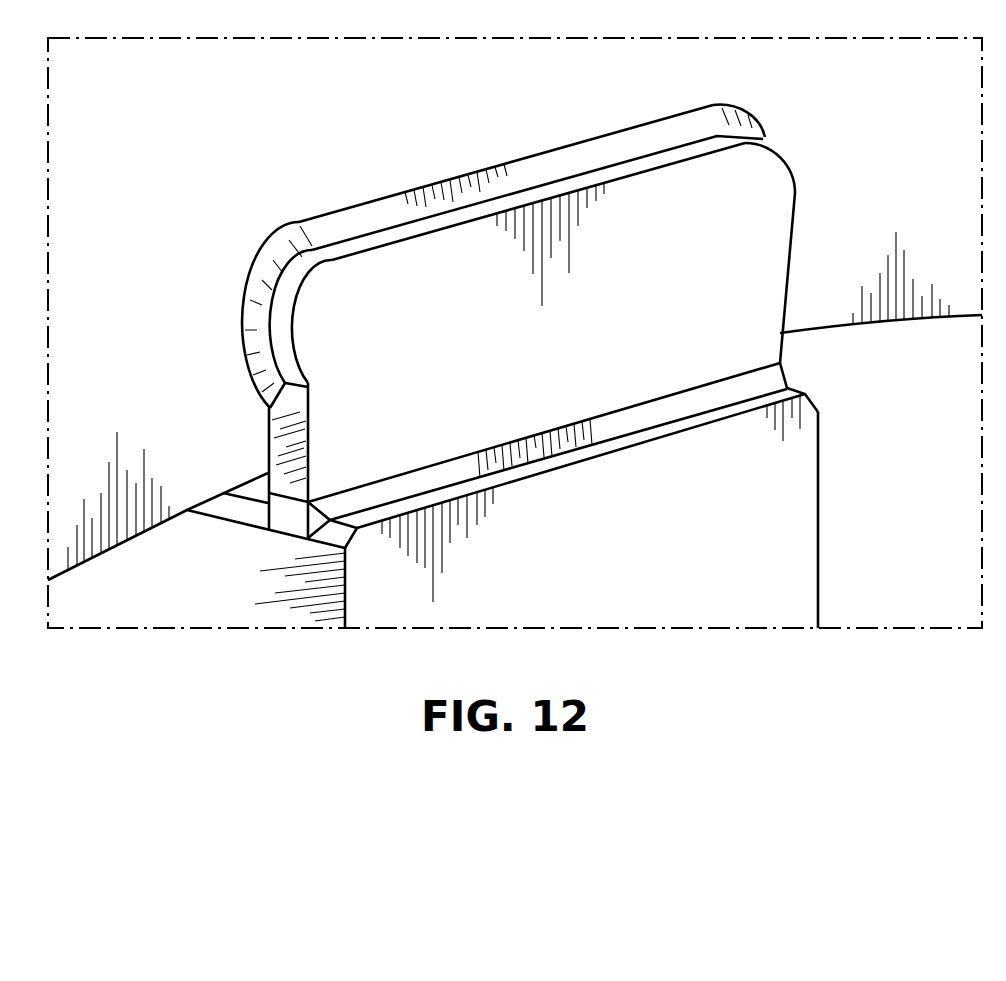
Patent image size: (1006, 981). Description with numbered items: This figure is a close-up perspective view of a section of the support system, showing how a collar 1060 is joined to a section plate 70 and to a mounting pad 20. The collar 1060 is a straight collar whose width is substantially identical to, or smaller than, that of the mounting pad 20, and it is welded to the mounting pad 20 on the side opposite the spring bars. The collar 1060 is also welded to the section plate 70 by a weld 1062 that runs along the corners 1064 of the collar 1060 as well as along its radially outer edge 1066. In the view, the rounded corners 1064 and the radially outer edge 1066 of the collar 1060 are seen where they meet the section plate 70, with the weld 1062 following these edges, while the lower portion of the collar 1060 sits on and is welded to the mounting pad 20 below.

The section plate 70 is at (421, 112).
The corners 1064 is at (318, 318).
The weld 1062 is at (660, 137).
The radially outer edge 1066 is at (636, 178).
The collar 1060 is at (544, 381).
The mounting pad 20 is at (606, 582).